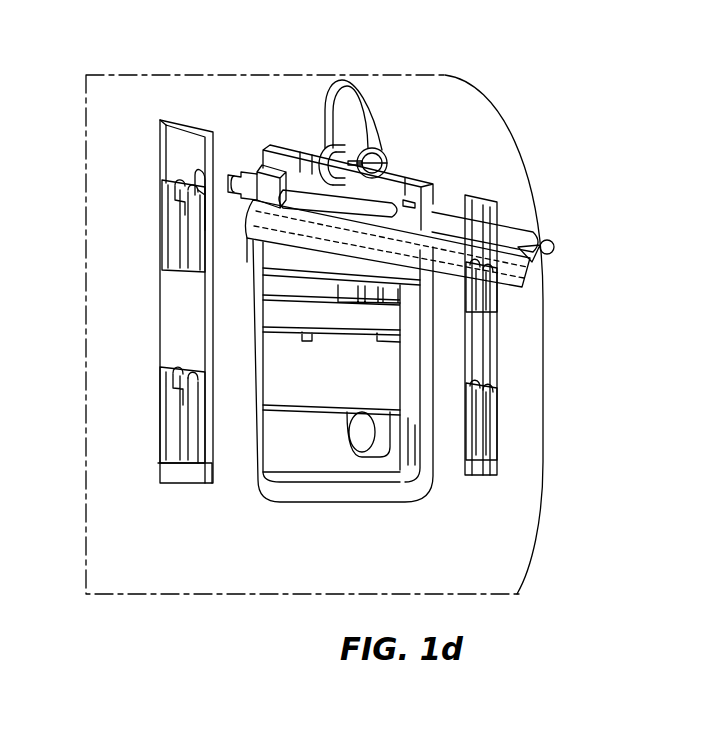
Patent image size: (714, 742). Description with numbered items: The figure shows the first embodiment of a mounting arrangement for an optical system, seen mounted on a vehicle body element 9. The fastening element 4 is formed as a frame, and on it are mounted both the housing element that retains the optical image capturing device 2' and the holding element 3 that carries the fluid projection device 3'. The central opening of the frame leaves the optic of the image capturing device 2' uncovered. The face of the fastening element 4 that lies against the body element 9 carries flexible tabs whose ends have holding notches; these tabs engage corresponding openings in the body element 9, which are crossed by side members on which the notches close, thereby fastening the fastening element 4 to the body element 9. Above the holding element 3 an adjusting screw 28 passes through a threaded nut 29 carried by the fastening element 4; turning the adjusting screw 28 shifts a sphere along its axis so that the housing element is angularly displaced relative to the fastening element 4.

The optical image capturing device 2' is at (426, 379).
The holding element 3 is at (431, 245).
The fluid projection device 3' is at (420, 212).
The fastening element 4 is at (407, 193).
The body element 9 is at (502, 540).
The adjusting screw 28 is at (370, 150).
The threaded nut 29 is at (328, 132).